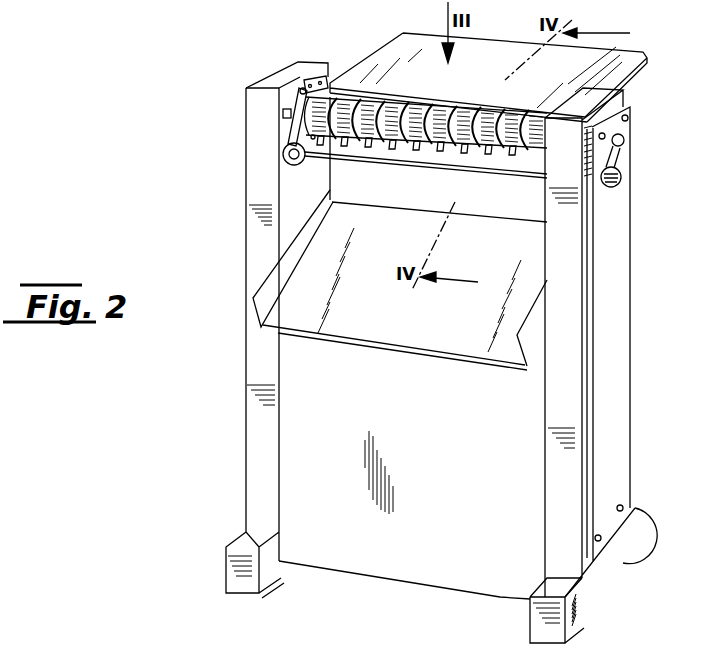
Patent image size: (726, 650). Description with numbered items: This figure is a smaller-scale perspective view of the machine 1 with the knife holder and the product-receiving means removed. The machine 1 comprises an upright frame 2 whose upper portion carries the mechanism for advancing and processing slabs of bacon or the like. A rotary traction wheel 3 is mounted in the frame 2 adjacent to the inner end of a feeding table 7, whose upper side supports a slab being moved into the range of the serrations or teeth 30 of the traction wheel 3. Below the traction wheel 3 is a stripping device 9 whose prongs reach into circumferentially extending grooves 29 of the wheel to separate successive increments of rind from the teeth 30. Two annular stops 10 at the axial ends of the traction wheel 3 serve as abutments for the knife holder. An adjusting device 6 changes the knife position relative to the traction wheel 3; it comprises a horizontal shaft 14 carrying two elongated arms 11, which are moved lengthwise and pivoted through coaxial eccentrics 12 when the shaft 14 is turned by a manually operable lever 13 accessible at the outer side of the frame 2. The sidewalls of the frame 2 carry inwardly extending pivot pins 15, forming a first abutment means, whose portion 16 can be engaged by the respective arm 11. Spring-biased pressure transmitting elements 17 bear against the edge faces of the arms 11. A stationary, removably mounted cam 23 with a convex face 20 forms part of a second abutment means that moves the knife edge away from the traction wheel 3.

The machine 1 is at (193, 140).
The frame 2 is at (258, 428).
The traction wheel 3 is at (483, 151).
The adjusting device 6 is at (278, 124).
The feeding table 7 is at (613, 60).
The stripping device 9 is at (527, 155).
The annular stops 10 is at (300, 122).
The arms 11 is at (300, 93).
The eccentrics 12 is at (282, 157).
The lever 13 is at (622, 146).
The shaft 14 is at (404, 166).
The pivot pins 15 is at (312, 180).
The engagement portion of pivot pin 16 is at (318, 139).
The pressure transmitting elements 17 is at (285, 113).
The convex face 20 is at (301, 76).
The cam 23 is at (331, 78).
The grooves 29 is at (446, 110).
The teeth 30 is at (411, 104).